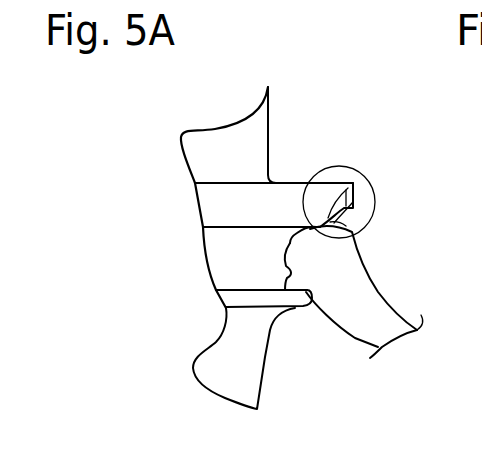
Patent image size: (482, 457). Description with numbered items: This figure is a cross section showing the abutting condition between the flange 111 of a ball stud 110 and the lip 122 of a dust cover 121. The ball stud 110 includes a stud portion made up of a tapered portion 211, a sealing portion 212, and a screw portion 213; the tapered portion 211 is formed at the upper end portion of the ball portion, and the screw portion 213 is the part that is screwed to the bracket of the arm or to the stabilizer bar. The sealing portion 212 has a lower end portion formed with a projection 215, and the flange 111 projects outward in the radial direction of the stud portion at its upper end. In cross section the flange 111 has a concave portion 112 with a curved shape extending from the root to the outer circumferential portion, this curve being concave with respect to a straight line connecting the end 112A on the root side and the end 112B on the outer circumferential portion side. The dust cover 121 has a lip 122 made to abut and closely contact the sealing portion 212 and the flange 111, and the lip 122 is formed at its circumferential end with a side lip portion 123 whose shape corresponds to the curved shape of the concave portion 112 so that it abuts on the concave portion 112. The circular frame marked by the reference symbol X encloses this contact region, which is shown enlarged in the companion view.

The ball stud 110 is at (297, 97).
The flange 111 is at (218, 198).
The concave portion 112 is at (322, 200).
The end on the root side 112A is at (345, 227).
The end on the outer circumferential portion side 112B is at (355, 190).
The side lip portion 123 is at (352, 205).
The dust cover 121 is at (384, 290).
The lip 122 is at (330, 262).
The tapered portion 211 is at (247, 379).
The sealing portion 212 is at (226, 253).
The screw portion 213 is at (268, 152).
The projection 215 is at (292, 297).
The frame X is at (320, 175).